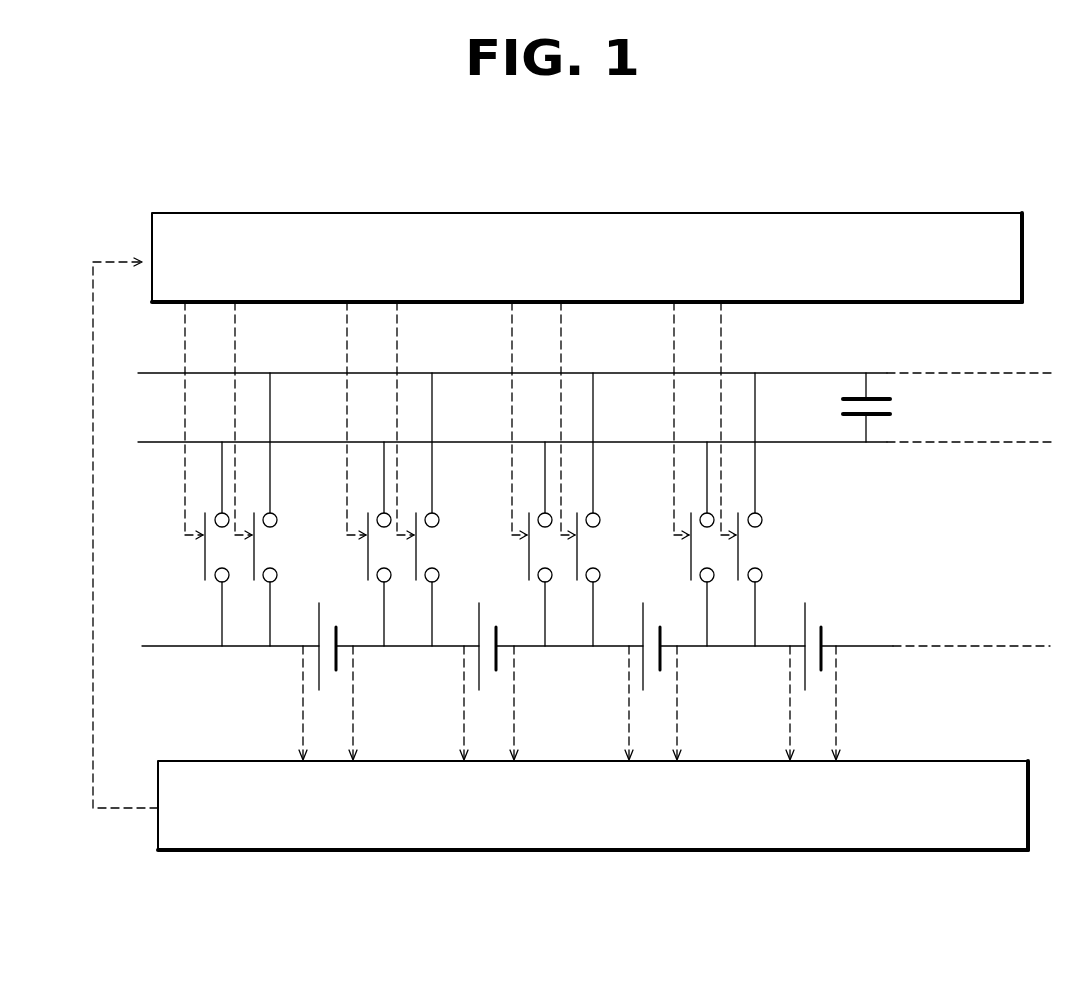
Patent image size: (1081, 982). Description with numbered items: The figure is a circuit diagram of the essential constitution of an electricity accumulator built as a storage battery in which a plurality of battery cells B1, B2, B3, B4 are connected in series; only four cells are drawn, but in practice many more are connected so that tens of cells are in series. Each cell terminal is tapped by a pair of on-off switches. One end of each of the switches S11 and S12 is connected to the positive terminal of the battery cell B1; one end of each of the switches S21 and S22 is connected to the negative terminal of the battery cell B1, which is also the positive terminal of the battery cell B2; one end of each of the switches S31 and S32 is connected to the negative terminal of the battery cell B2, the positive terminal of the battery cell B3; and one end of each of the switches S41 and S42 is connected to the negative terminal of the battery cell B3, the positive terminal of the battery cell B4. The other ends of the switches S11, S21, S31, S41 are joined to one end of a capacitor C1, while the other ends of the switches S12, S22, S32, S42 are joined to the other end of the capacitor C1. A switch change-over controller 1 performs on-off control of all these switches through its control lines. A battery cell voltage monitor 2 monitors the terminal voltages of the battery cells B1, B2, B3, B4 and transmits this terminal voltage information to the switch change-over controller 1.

The switch change-over controller 1 is at (930, 212).
The battery cell voltage monitor 2 is at (962, 760).
The capacitor C1 is at (886, 416).
The battery cell B1 is at (319, 675).
The battery cell B2 is at (479, 675).
The battery cell B3 is at (643, 675).
The battery cell B4 is at (805, 675).
The switch S11 is at (205, 569).
The switch S12 is at (262, 550).
The switch S21 is at (368, 569).
The switch S22 is at (424, 550).
The switch S31 is at (529, 569).
The switch S32 is at (584, 550).
The switch S41 is at (691, 569).
The switch S42 is at (749, 550).